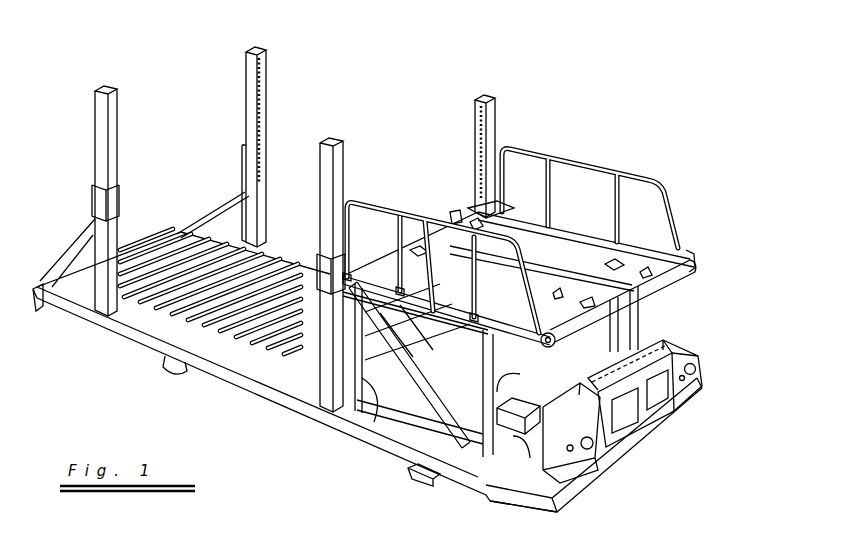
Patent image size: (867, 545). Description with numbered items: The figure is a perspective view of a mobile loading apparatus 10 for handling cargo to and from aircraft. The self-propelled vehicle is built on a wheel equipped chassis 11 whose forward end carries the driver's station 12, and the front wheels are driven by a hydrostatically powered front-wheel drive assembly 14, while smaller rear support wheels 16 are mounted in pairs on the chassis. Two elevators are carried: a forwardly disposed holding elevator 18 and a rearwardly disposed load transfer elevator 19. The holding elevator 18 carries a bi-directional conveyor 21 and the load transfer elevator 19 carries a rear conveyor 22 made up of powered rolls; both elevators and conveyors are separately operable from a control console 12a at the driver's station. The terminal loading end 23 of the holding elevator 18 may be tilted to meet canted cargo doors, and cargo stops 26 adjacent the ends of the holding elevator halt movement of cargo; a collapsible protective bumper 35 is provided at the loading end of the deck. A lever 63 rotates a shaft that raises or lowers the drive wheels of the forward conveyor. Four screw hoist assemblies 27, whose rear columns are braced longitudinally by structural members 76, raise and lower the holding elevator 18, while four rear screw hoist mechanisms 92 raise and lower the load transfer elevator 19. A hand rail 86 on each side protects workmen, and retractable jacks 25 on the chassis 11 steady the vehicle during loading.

The mobile loading apparatus 10 is at (362, 82).
The chassis 11 is at (243, 400).
The driver's station 12 is at (518, 455).
The control console 12a is at (575, 400).
The front-wheel drive assembly 14 is at (379, 394).
The rear support wheels 16 is at (170, 372).
The holding elevator 18 is at (644, 261).
The load transfer elevator 19 is at (156, 233).
The conveyor 21 is at (510, 210).
The rear conveyor 22 is at (272, 258).
The loading end 23 is at (704, 259).
The retractable jacks 25 is at (418, 480).
The cargo stops 26 is at (652, 277).
The screw hoist assemblies 27 is at (352, 406).
The collapsible protective bumper 35 is at (657, 288).
The lever 63 is at (436, 271).
The structural members 76 is at (414, 382).
The hand rail 86 is at (598, 170).
The rear screw hoist mechanisms 92 is at (110, 88).